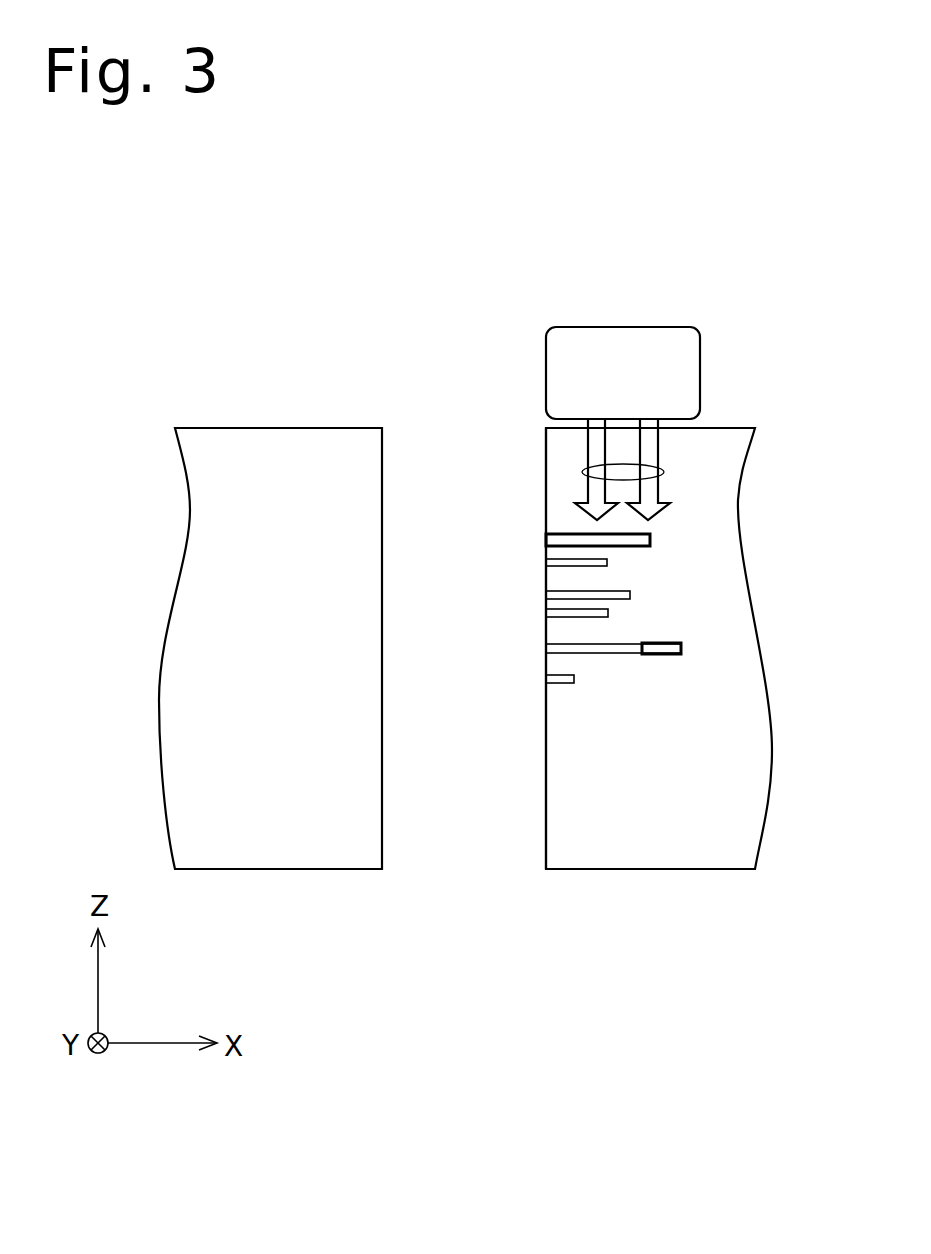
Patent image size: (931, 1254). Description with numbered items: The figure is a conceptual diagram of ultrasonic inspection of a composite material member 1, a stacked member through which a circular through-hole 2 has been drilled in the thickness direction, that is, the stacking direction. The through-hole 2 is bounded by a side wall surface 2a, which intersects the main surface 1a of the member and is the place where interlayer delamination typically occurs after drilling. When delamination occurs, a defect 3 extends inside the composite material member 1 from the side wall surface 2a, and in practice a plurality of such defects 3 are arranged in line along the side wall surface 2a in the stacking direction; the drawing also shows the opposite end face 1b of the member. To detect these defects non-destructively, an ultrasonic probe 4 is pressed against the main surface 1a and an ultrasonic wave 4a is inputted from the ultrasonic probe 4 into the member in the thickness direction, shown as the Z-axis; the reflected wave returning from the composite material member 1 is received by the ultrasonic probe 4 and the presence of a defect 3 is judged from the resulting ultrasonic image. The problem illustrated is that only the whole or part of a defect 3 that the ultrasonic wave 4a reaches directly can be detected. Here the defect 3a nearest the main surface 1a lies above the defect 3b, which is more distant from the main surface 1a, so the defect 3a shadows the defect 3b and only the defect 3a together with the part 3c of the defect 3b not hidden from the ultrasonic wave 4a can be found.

The composite material member 1 is at (739, 486).
The main surface 1a is at (714, 428).
The lower end surface of first member 1b is at (655, 863).
The through-hole 2 is at (488, 483).
The side wall surface 2a is at (546, 843).
The defect 3 is at (546, 563).
The defect 3a is at (546, 540).
The defect 3b is at (546, 648).
The part of defect 3c is at (679, 654).
The ultrasonic probe 4 is at (667, 326).
The ultrasonic wave 4a is at (660, 466).